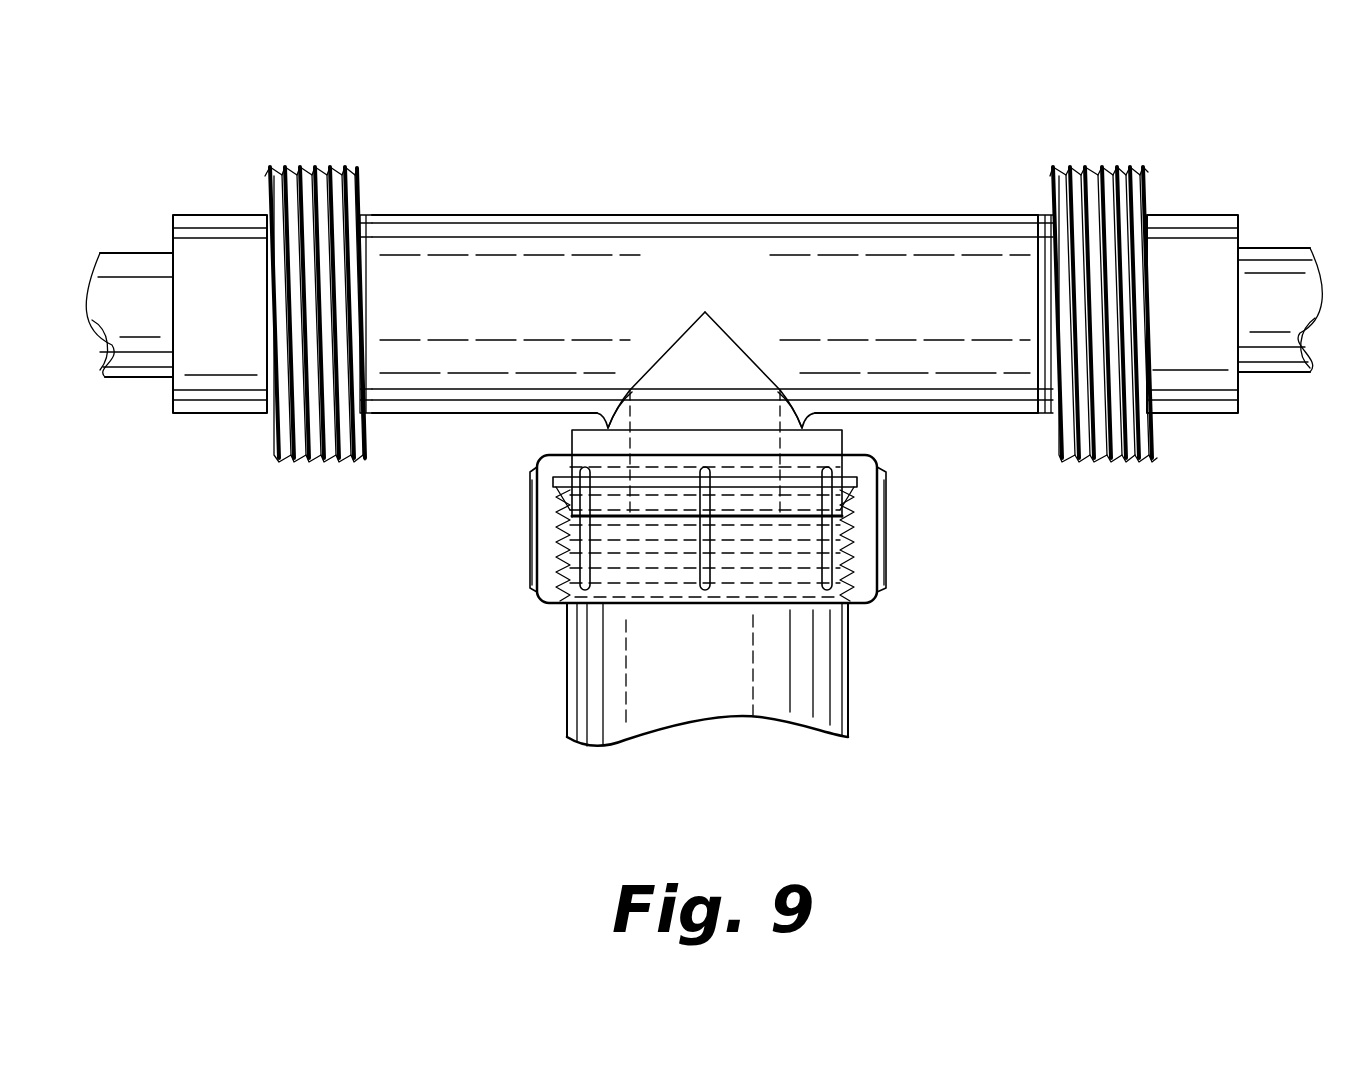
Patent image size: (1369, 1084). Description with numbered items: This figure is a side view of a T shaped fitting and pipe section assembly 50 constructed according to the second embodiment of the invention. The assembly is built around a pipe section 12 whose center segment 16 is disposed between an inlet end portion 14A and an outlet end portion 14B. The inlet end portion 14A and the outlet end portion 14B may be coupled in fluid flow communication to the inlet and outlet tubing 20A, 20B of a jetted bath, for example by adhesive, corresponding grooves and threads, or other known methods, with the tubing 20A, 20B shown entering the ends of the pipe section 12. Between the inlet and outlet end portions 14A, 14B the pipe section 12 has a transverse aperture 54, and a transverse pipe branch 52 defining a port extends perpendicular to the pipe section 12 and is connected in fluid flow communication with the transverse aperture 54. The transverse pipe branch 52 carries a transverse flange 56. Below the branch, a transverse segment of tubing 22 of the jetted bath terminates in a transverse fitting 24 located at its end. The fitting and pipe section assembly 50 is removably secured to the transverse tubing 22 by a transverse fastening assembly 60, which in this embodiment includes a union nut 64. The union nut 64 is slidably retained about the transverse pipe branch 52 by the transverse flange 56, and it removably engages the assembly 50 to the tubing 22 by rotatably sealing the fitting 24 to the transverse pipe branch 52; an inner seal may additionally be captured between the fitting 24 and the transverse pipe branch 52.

The pipe section 12 is at (912, 190).
The inlet end portion 14A is at (215, 215).
The outlet end portion 14B is at (1185, 215).
The center segment 16 is at (503, 215).
The tubing 20A is at (135, 270).
The tubing 20B is at (1283, 260).
The transverse segment of tubing 22 is at (853, 730).
The transverse fitting 24 is at (857, 605).
The T shaped fitting and pipe section assembly 50 is at (373, 553).
The transverse pipe branch 52 is at (727, 388).
The transverse aperture 54 is at (667, 363).
The transverse flange 56 is at (887, 517).
The transverse fastening assembly 60 is at (942, 540).
The union nut 64 is at (867, 565).